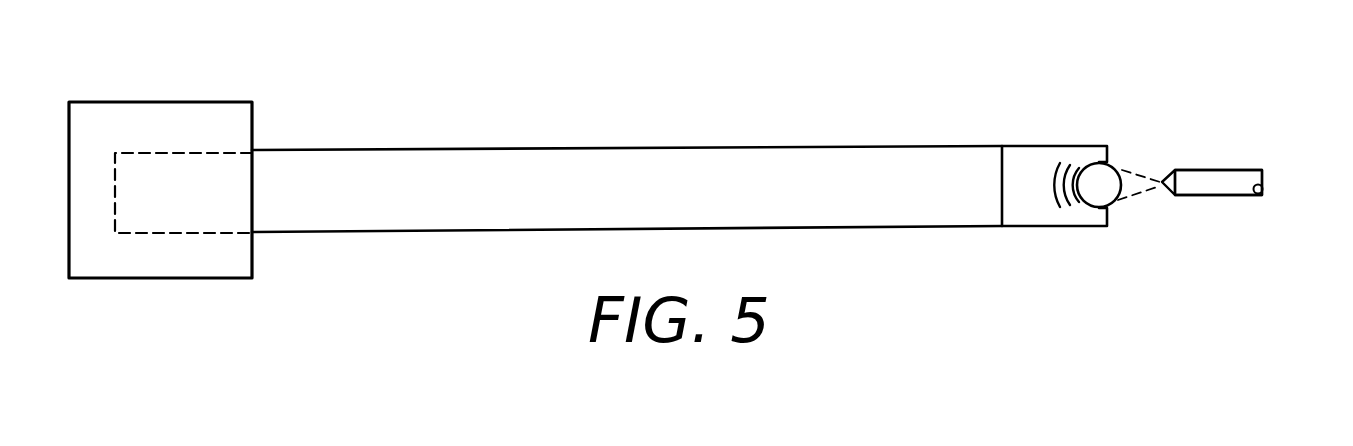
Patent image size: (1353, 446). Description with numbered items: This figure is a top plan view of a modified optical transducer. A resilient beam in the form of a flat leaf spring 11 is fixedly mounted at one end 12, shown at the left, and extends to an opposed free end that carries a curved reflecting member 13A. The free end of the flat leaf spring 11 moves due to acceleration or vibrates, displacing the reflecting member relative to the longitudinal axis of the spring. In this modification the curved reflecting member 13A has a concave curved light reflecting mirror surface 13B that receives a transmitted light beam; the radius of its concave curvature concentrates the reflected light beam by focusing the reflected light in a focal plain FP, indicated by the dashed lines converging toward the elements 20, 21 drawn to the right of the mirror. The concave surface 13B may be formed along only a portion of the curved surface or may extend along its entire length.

The flat leaf spring 11 is at (577, 162).
The fixedly mounted end 12 is at (191, 165).
The curved reflecting member 13A is at (1045, 153).
The concave curved light reflecting mirror surface 13B is at (1114, 180).
The tool 20 is at (1235, 177).
The tool tip 21 is at (1218, 182).
The focal plain FP is at (1155, 185).